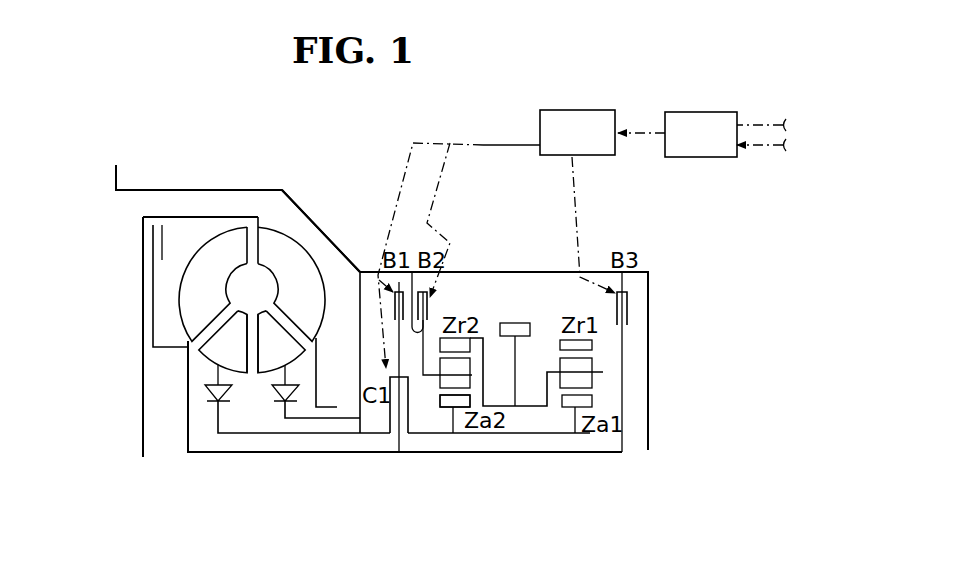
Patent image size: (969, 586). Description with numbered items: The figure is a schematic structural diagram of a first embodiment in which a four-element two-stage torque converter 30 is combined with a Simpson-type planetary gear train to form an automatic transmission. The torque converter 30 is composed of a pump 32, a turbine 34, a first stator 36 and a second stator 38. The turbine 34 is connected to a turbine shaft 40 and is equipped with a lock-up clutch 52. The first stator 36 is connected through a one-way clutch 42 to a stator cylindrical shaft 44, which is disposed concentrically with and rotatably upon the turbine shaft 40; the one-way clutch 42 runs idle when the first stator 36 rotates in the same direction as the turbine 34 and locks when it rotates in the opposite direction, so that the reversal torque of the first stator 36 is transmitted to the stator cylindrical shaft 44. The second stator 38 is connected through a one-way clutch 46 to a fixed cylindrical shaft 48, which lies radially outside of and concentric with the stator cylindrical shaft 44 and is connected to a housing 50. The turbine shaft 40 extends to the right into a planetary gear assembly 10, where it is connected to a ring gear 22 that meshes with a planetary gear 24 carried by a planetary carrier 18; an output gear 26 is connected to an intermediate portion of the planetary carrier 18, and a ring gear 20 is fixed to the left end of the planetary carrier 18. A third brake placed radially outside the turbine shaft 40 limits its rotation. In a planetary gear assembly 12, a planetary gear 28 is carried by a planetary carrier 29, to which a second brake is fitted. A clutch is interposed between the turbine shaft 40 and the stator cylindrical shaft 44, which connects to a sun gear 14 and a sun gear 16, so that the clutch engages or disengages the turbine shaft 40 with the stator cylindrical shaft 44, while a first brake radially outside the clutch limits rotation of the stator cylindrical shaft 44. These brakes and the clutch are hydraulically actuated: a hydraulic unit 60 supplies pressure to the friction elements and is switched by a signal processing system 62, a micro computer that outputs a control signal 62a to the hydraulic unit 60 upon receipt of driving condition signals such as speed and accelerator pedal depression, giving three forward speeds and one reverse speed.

The planetary gear assembly 10 is at (591, 247).
The planetary gear assembly 12 is at (480, 247).
The sun gear 14 is at (585, 437).
The sun gear 16 is at (440, 435).
The planetary carrier 18 is at (535, 400).
The ring gear 20 is at (442, 337).
The ring gear 22 is at (592, 345).
The planetary gear 24 is at (592, 382).
The output gear 26 is at (508, 322).
The planetary gear 28 is at (423, 435).
The planetary carrier 29 is at (412, 268).
The torque converter 30 is at (218, 172).
The pump 32 is at (297, 267).
The turbine 34 is at (193, 302).
The first stator 36 is at (217, 352).
The second stator 38 is at (252, 435).
The turbine shaft 40 is at (197, 455).
The one-way clutch 42 is at (210, 398).
The stator cylindrical shaft 44 is at (303, 435).
The one-way clutch 46 is at (322, 433).
The fixed cylindrical shaft 48 is at (350, 430).
The housing 50 is at (357, 248).
The lock-up clutch 52 is at (152, 270).
The hydraulic unit 60 is at (583, 110).
The signal processing system 62 is at (695, 112).
The control signal 62a is at (646, 128).